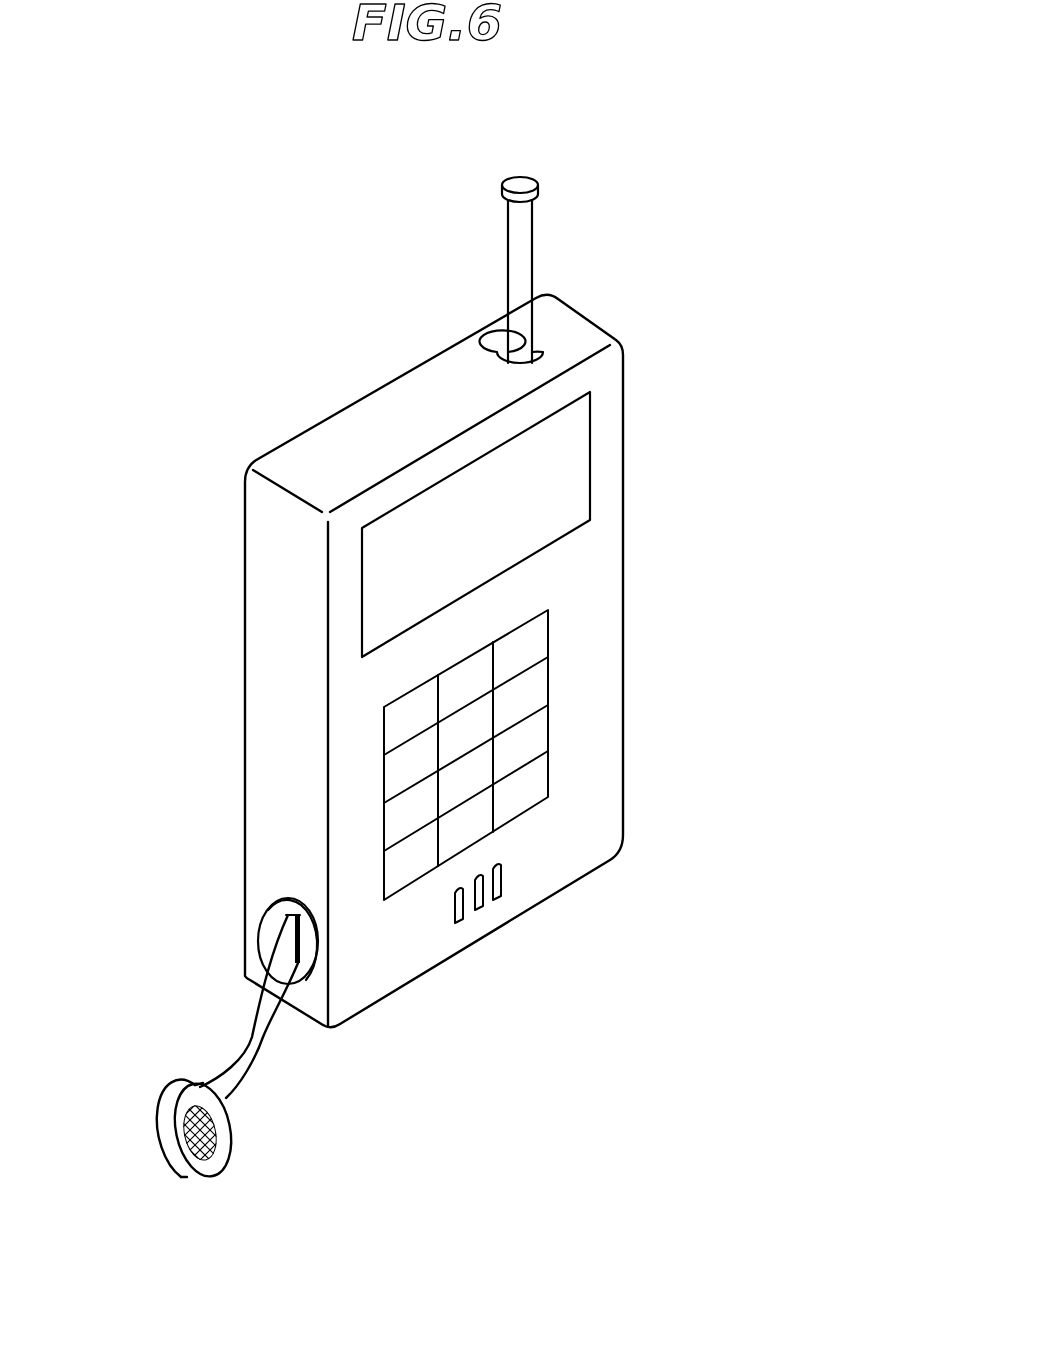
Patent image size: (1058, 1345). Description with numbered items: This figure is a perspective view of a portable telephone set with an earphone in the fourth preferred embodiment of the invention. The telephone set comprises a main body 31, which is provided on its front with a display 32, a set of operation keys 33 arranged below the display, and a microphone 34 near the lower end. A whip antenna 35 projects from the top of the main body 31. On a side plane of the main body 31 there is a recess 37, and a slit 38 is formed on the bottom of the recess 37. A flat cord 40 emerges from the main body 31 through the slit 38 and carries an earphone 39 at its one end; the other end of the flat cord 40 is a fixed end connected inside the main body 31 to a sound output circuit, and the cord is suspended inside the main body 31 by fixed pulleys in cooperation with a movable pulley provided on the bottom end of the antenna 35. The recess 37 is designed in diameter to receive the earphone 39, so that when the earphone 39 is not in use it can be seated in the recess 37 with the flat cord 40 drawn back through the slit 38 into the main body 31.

The main body 31 is at (590, 743).
The display 32 is at (565, 448).
The operation keys 33 is at (532, 643).
The microphone 34 is at (497, 908).
The whip antenna 35 is at (523, 243).
The recess 37 is at (260, 920).
The slit 38 is at (293, 918).
The earphone 39 is at (215, 1152).
The flat cord 40 is at (247, 1055).